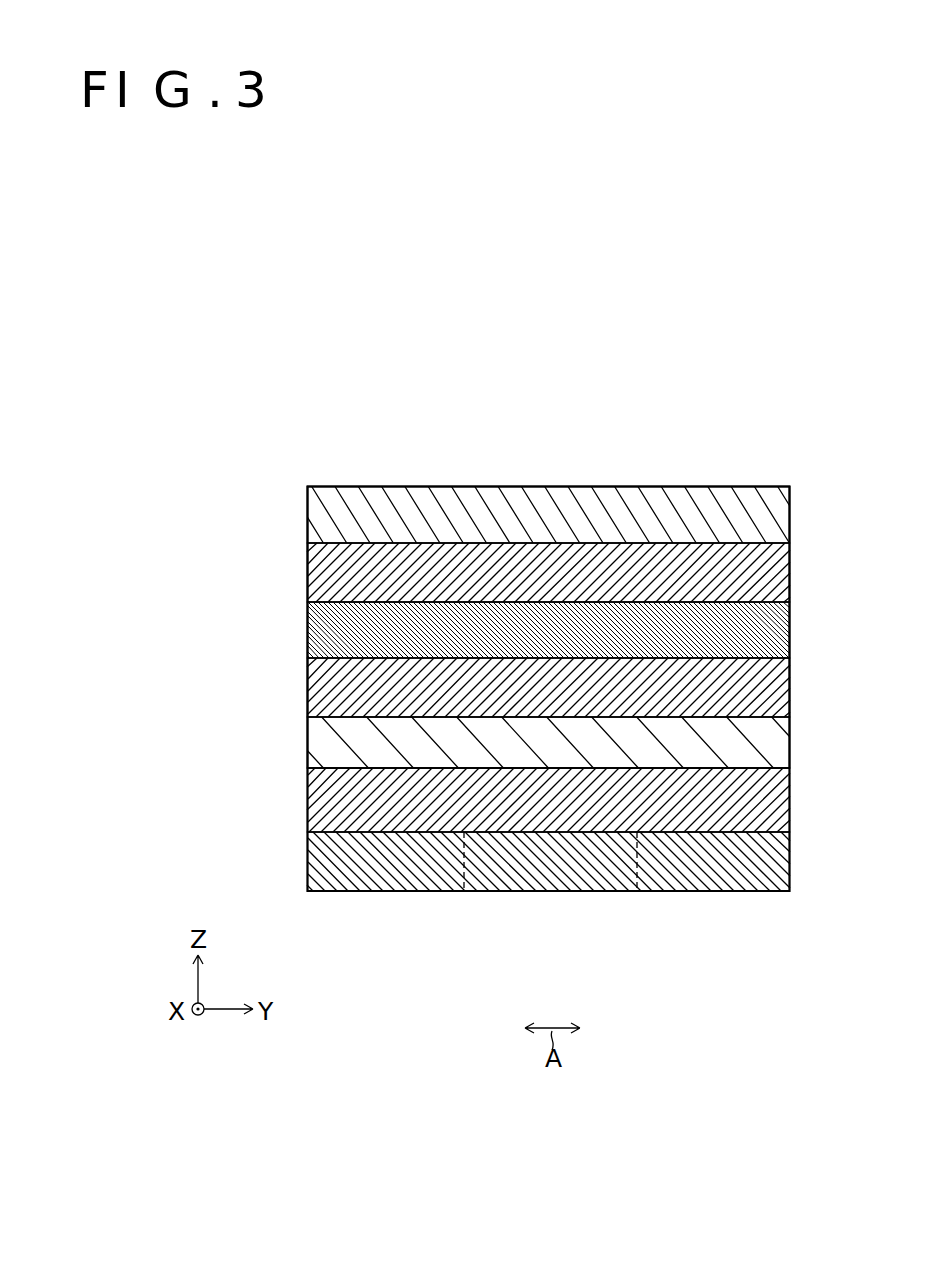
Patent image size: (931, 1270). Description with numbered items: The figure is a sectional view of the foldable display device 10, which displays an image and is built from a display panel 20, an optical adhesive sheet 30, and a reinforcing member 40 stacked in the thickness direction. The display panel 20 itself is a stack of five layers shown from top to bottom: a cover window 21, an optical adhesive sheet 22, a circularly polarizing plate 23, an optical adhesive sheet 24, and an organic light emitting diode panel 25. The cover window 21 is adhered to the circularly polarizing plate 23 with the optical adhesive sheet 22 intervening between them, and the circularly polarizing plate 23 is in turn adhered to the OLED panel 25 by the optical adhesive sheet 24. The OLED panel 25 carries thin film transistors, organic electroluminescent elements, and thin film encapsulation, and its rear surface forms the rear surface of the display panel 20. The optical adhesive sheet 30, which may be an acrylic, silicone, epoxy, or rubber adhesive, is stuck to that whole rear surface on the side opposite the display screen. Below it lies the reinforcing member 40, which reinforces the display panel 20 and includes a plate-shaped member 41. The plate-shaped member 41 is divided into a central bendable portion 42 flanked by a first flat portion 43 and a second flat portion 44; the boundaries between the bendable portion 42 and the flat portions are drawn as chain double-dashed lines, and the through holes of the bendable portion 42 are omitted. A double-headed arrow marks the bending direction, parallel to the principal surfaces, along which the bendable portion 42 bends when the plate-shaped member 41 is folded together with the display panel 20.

The display device 10 is at (277, 399).
The display panel 20 is at (248, 486).
The cover window 21 is at (320, 517).
The optical adhesive sheet 22 is at (320, 572).
The circularly polarizing plate 23 is at (320, 630).
The optical adhesive sheet 24 is at (320, 691).
The OLED panel 25 is at (320, 744).
The optical adhesive sheet 30 is at (320, 803).
The reinforcing member 40 is at (299, 864).
The plate-shaped member 41 is at (735, 928).
The bendable portion 42 is at (553, 878).
The first flat portion 43 is at (397, 878).
The second flat portion 44 is at (710, 878).